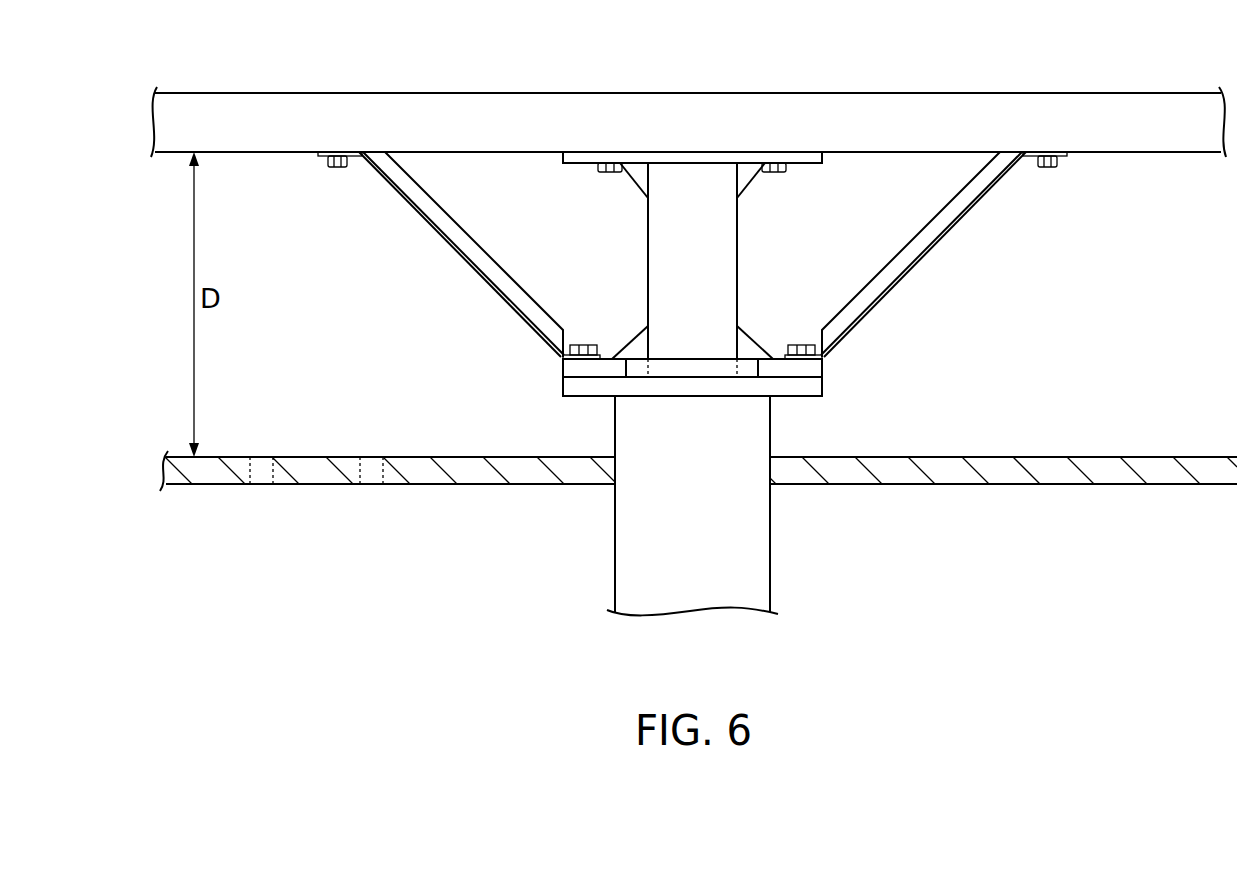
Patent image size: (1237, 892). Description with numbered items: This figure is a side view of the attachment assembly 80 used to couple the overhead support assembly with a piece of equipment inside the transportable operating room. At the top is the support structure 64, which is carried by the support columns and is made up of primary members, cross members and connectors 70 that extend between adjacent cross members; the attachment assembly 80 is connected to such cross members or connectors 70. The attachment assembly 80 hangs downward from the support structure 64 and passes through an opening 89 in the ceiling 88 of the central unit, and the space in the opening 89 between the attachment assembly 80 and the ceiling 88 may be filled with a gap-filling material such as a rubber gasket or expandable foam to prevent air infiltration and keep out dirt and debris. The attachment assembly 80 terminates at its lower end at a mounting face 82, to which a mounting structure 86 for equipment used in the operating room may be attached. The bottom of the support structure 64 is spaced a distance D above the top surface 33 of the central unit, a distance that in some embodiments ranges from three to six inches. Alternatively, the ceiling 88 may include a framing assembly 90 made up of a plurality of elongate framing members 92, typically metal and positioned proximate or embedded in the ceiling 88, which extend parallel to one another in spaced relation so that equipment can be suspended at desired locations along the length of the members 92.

The top surface 33 is at (698, 482).
The support structure 64 is at (688, 225).
The connector 70 is at (613, 100).
The attachment assembly 80 is at (948, 243).
The mounting face 82 is at (785, 378).
The mounting structure 86 is at (755, 545).
The ceiling 88 is at (1083, 477).
The opening 89 is at (616, 470).
The framing assembly 90 is at (269, 449).
The framing member 92 is at (305, 469).